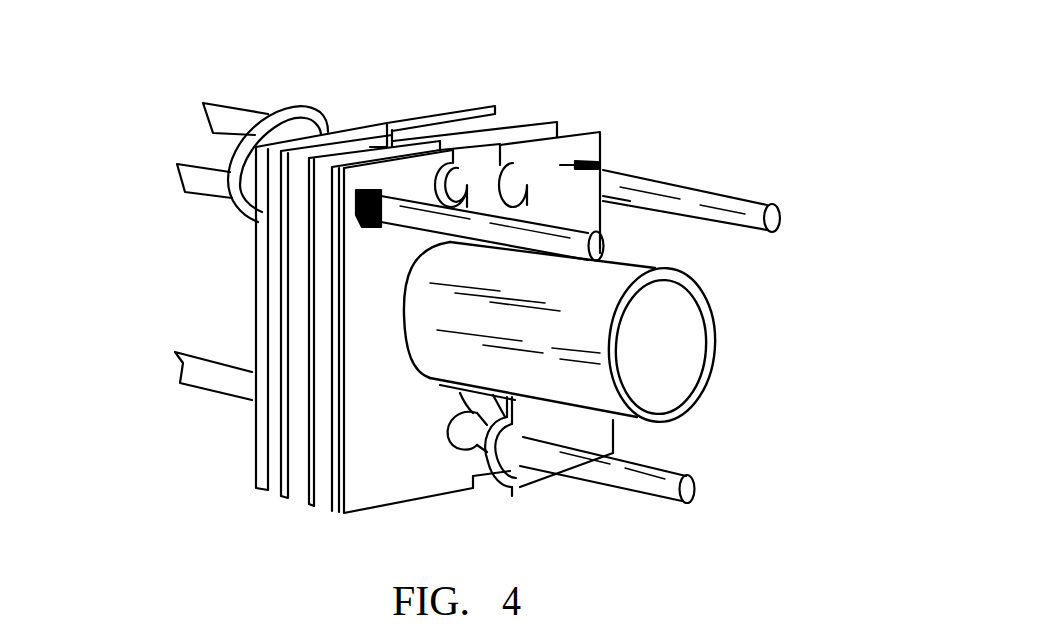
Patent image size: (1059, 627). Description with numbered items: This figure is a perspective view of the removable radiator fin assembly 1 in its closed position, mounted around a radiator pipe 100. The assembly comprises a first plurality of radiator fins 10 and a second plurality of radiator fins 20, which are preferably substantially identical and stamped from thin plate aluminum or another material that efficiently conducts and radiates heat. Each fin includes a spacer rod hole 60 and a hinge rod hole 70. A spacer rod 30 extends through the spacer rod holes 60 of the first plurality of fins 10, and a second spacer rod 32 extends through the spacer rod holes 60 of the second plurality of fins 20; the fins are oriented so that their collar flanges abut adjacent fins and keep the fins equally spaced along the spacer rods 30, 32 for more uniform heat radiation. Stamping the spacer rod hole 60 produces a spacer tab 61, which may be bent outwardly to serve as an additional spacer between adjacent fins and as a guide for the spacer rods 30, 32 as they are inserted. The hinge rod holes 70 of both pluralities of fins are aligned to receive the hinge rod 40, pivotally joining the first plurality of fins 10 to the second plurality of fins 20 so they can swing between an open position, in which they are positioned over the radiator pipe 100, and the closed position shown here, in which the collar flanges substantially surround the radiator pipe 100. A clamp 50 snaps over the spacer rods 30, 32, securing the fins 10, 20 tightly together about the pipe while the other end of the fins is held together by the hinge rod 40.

The removable radiator fin assembly 1 is at (130, 158).
The first plurality of radiator fins 10 is at (525, 158).
The second plurality of radiator fins 20 is at (382, 463).
The spacer rod 30 is at (753, 203).
The second spacer rod 32 is at (603, 203).
The hinge rod 40 is at (670, 488).
The clamp 50 is at (292, 120).
The spacer rod hole 60 is at (358, 228).
The spacer tab 61 is at (571, 183).
The hinge rod hole 70 is at (448, 435).
The radiator pipe 100 is at (677, 363).